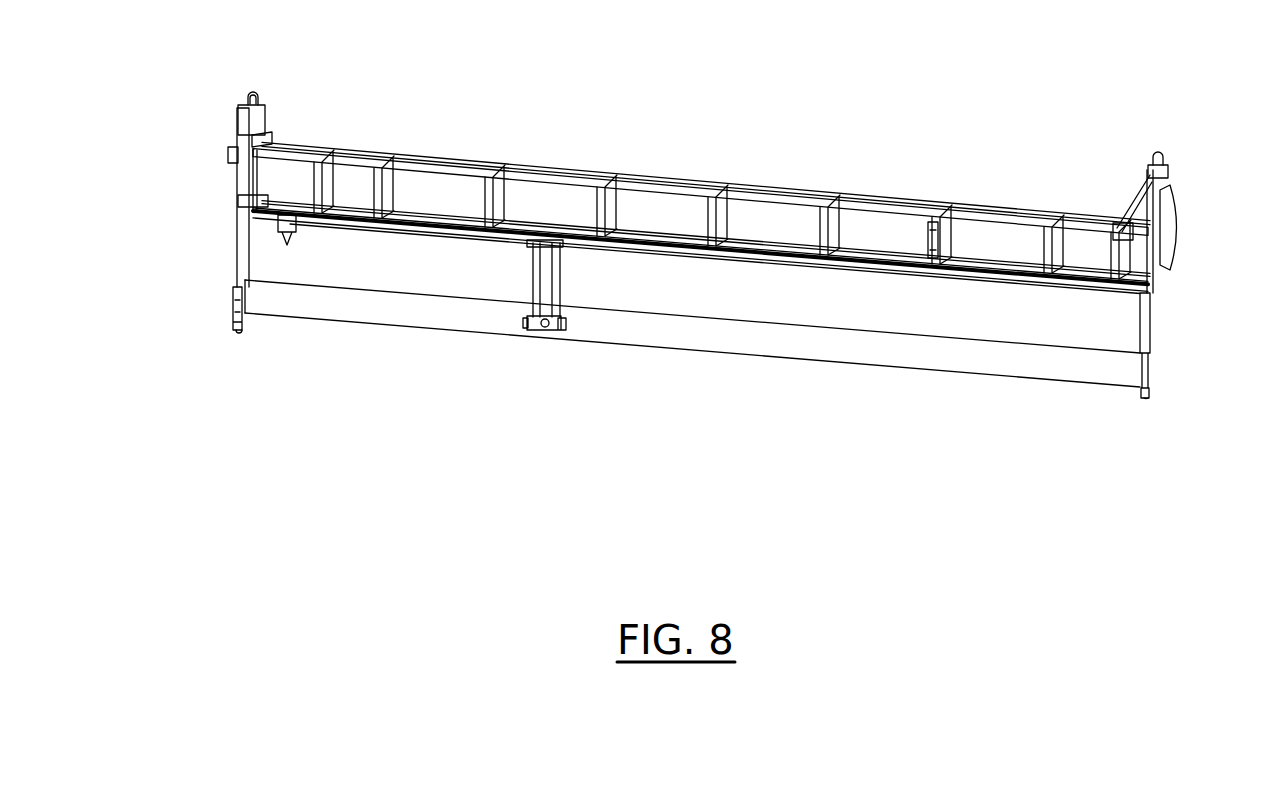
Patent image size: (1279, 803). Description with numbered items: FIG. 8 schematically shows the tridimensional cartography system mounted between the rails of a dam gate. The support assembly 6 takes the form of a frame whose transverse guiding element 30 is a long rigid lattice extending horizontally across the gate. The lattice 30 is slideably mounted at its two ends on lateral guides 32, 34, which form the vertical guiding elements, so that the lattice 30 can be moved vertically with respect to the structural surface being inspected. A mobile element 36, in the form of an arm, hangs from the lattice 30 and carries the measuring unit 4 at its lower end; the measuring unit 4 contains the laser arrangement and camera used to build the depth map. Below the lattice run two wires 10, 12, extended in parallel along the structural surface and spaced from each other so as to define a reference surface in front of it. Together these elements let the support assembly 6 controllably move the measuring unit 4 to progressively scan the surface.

The support assembly 6 is at (701, 163).
The transverse guiding element 30 is at (510, 163).
The lateral guide 32 is at (232, 258).
The lateral guide 34 is at (1152, 326).
The mobile element 36 is at (560, 285).
The measuring unit 4 is at (563, 328).
The wire 12 is at (335, 287).
The wire 10 is at (428, 323).